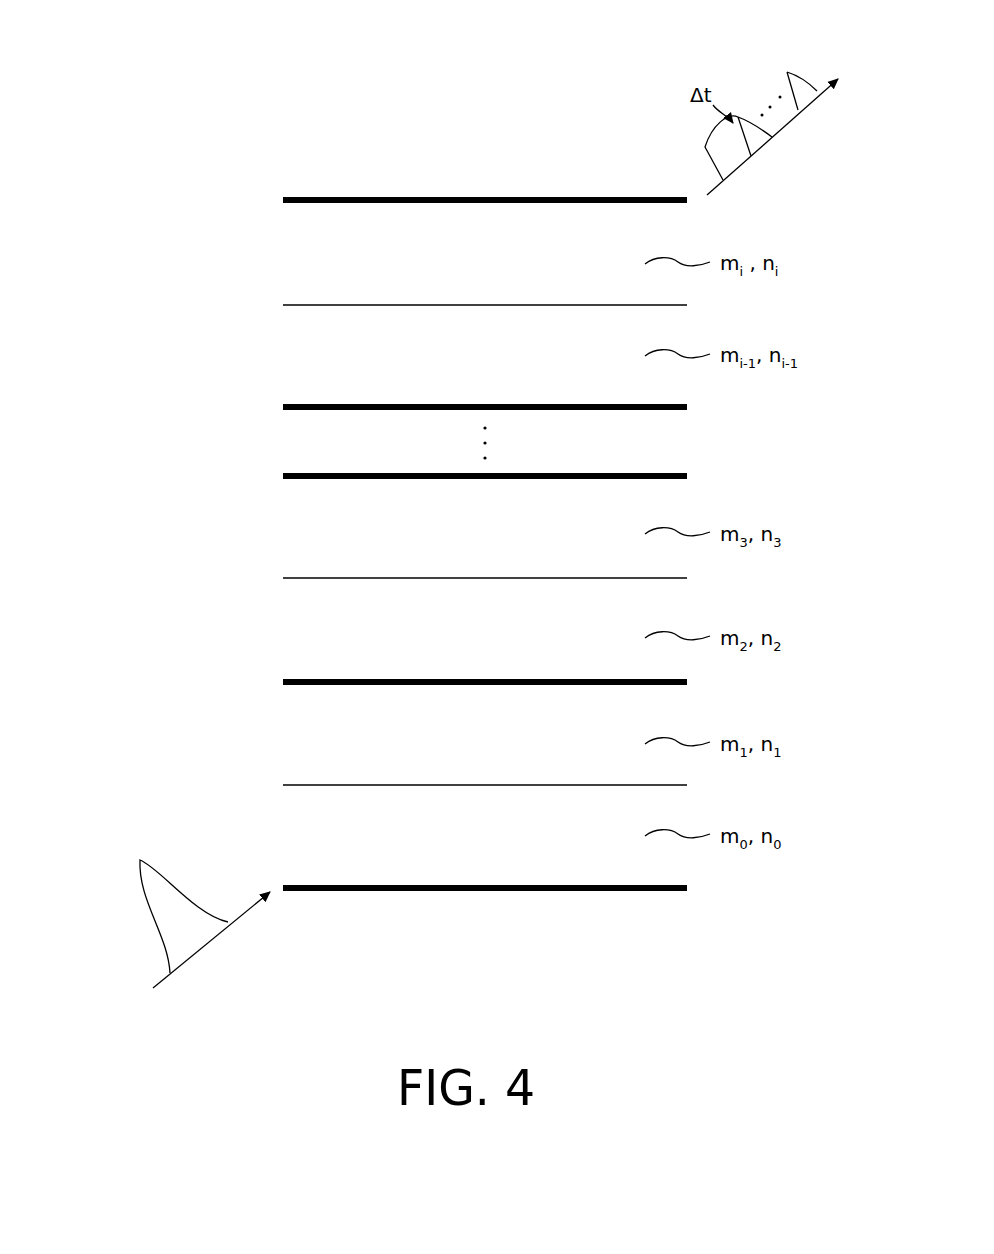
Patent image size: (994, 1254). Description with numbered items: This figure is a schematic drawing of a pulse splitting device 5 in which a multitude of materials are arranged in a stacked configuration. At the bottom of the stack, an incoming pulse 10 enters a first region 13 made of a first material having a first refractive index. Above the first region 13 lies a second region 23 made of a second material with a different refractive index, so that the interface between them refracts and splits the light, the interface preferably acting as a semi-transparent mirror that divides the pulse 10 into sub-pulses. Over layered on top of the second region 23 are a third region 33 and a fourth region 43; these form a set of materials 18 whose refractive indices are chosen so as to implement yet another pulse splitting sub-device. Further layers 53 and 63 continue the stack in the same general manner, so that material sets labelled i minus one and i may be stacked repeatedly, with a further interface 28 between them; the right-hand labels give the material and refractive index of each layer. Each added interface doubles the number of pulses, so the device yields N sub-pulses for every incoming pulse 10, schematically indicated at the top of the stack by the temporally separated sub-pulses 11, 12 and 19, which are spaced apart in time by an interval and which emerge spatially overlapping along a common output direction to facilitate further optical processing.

The pulse splitting device 5 is at (178, 86).
The incoming pulse 10 is at (150, 914).
The sub-pulse 11 is at (727, 185).
The sub-pulse 12 is at (750, 110).
The first region 13 is at (295, 861).
The set of materials 18 is at (261, 575).
The sub-pulse 19 is at (791, 70).
The second region 23 is at (295, 715).
The second interface 28 is at (261, 301).
The third region 33 is at (295, 649).
The fourth region 43 is at (295, 505).
The fifth layer 53 is at (295, 380).
The top layer 63 is at (295, 234).